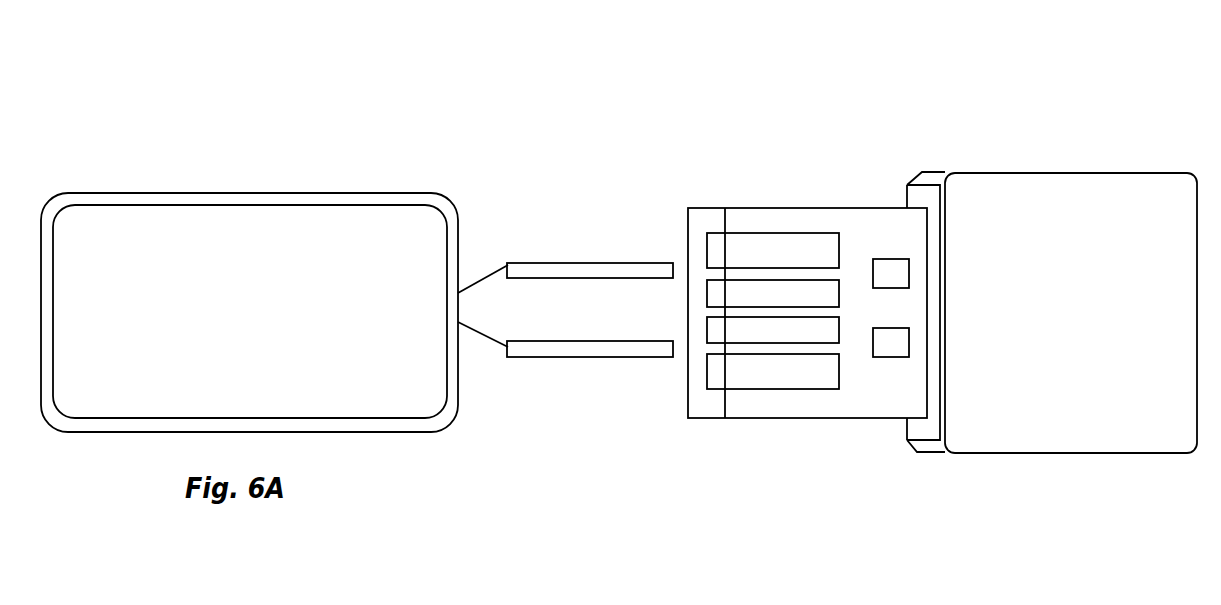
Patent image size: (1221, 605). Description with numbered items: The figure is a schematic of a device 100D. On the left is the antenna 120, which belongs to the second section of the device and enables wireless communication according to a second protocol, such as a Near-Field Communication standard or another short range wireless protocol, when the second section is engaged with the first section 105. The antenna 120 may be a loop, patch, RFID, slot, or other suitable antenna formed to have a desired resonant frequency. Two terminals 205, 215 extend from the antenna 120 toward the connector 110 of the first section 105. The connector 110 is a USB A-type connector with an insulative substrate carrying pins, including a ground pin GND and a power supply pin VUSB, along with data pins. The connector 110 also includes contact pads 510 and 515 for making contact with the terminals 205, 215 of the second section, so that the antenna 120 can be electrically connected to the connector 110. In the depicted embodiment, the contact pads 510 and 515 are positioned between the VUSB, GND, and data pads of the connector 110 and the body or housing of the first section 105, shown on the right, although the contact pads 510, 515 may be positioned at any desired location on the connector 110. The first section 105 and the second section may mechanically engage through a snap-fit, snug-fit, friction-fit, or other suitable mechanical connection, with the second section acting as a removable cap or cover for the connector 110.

The device 100D is at (524, 61).
The antenna 120 is at (221, 193).
The terminal 205 is at (577, 268).
The terminal 215 is at (595, 348).
The connector 110 is at (765, 208).
The ground pin GND is at (718, 250).
The power supply pin VUSB is at (720, 382).
The contact pad 510 is at (892, 267).
The contact pad 515 is at (890, 347).
The first section 105 is at (1057, 173).